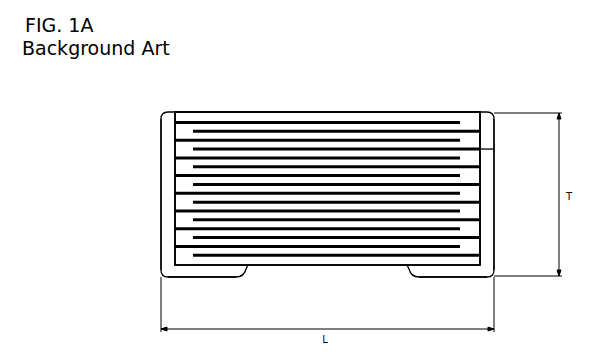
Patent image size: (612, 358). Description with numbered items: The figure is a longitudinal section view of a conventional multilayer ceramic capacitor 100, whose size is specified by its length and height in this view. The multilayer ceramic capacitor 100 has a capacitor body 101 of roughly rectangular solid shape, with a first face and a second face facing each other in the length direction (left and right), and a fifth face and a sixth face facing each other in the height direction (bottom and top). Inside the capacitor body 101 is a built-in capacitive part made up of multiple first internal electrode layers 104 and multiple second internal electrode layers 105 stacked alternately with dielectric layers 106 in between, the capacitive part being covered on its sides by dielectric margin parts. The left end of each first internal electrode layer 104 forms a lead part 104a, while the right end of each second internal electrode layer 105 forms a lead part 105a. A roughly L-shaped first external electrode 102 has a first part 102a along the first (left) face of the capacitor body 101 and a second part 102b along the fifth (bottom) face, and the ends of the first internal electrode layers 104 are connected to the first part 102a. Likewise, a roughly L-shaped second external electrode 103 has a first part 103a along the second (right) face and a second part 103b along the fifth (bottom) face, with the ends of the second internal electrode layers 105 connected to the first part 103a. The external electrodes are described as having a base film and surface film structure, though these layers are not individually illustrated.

The multilayer ceramic capacitor 100 is at (212, 109).
The capacitor body 101 is at (253, 112).
The first external electrode 102 is at (161, 170).
The first part of first external electrode 102a is at (161, 222).
The second part of first external electrode 102b is at (210, 278).
The second external electrode 103 is at (494, 168).
The first part of second external electrode 103a is at (494, 222).
The second part of second external electrode 103b is at (443, 278).
The first internal electrode layer 104 is at (294, 140).
The lead part 104a is at (161, 135).
The second internal electrode layer 105 is at (369, 148).
The lead part 105a is at (494, 146).
The dielectric layer 106 is at (404, 145).